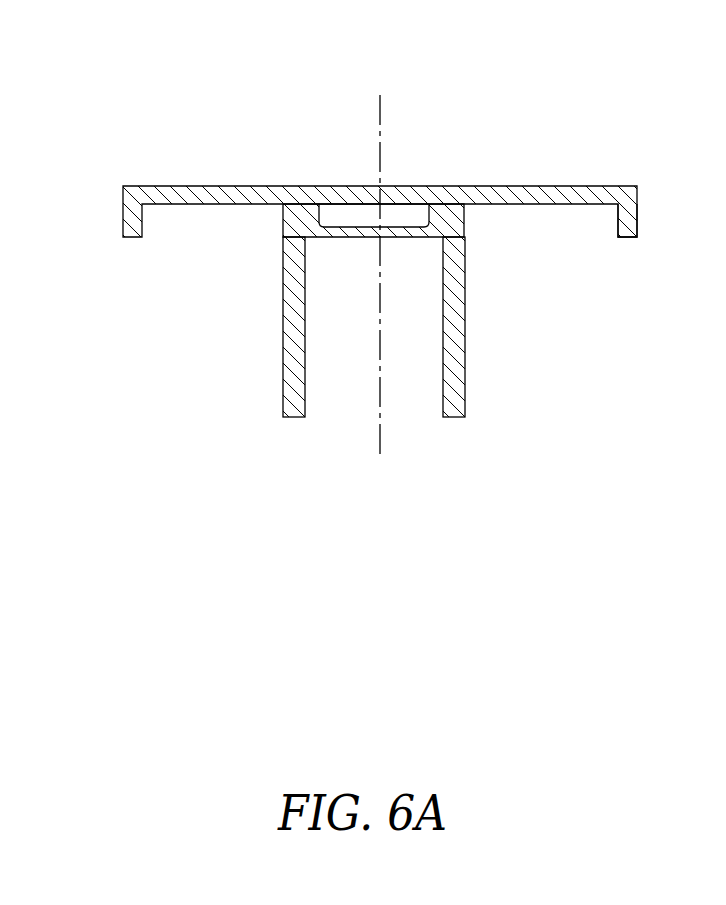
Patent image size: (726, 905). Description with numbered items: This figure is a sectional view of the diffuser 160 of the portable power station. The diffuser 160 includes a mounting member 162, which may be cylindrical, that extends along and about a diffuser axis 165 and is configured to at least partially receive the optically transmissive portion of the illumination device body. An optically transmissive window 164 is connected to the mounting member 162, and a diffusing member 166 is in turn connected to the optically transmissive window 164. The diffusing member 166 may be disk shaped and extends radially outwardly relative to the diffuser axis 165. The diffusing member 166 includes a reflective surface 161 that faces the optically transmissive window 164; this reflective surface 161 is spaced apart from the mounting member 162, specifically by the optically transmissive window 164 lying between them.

The diffuser 160 is at (132, 139).
The reflective surface 161 is at (508, 205).
The mounting member 162 is at (291, 337).
The optically transmissive window 164 is at (285, 222).
The diffuser axis 165 is at (381, 441).
The diffusing member 166 is at (628, 201).